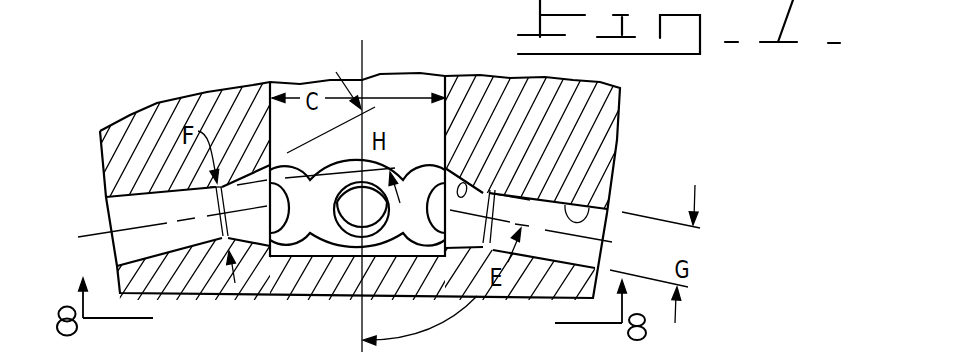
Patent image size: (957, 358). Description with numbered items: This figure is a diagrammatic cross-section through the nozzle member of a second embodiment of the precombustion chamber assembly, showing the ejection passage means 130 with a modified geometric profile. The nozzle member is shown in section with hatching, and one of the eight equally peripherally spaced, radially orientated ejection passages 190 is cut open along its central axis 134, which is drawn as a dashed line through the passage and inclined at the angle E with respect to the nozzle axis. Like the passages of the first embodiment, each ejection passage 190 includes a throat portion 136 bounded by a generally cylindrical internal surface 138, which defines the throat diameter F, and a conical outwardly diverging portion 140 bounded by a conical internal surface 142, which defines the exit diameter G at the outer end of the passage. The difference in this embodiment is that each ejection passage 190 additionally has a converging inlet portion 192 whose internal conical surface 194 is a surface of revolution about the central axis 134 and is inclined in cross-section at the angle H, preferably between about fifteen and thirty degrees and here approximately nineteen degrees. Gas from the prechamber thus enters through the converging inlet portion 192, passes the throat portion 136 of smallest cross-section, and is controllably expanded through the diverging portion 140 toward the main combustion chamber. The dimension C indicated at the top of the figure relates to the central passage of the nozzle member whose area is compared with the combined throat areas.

The ejection passage means 130 is at (126, 191).
The central axis 134 is at (98, 234).
The throat portion 136 is at (218, 186).
The cylindrical internal surface 138 is at (226, 236).
The conical outwardly diverging portion 140 is at (500, 186).
The conical internal surface 142 is at (568, 194).
The ejection passage 190 is at (516, 200).
The converging inlet portion 192 is at (461, 182).
The internal conical surface 194 is at (475, 183).